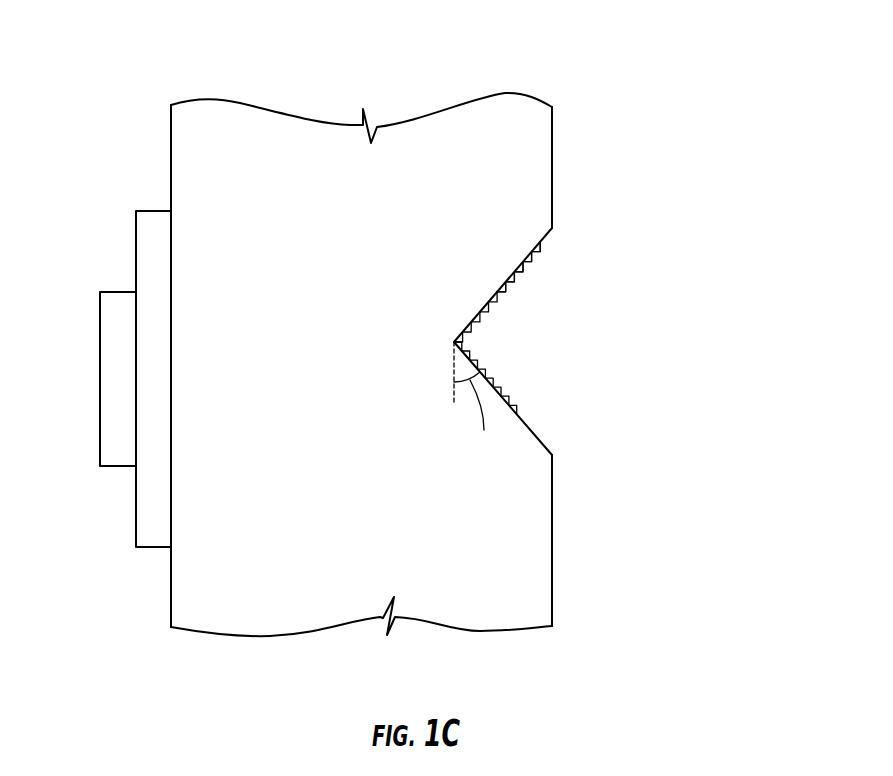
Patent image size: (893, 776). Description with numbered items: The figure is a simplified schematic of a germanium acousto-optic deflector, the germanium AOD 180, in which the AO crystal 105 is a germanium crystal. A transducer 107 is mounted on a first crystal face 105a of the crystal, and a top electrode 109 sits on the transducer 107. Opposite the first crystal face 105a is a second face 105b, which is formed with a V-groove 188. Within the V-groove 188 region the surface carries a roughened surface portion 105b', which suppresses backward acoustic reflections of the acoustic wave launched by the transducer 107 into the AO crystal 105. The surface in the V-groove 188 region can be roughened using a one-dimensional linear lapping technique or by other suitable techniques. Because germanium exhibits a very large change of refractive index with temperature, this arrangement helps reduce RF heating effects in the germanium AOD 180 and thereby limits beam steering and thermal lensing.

The AO crystal 105 is at (330, 594).
The first crystal face 105a is at (168, 590).
The second face 105b is at (603, 156).
The roughened surface portion 105b' is at (461, 261).
The transducer 107 is at (150, 211).
The top electrode 109 is at (100, 362).
The germanium AOD 180 is at (752, 118).
The V-groove 188 is at (608, 401).